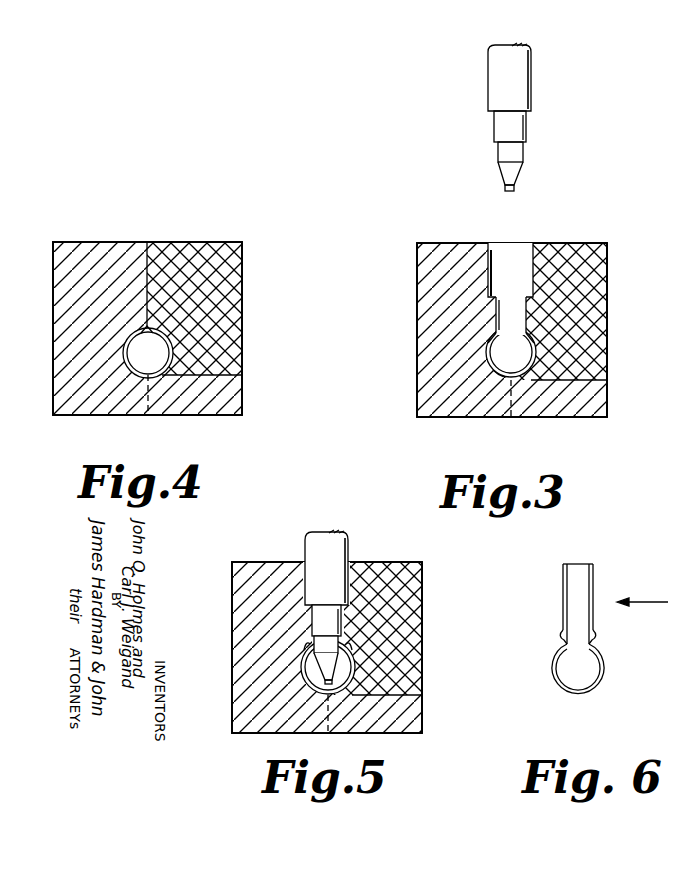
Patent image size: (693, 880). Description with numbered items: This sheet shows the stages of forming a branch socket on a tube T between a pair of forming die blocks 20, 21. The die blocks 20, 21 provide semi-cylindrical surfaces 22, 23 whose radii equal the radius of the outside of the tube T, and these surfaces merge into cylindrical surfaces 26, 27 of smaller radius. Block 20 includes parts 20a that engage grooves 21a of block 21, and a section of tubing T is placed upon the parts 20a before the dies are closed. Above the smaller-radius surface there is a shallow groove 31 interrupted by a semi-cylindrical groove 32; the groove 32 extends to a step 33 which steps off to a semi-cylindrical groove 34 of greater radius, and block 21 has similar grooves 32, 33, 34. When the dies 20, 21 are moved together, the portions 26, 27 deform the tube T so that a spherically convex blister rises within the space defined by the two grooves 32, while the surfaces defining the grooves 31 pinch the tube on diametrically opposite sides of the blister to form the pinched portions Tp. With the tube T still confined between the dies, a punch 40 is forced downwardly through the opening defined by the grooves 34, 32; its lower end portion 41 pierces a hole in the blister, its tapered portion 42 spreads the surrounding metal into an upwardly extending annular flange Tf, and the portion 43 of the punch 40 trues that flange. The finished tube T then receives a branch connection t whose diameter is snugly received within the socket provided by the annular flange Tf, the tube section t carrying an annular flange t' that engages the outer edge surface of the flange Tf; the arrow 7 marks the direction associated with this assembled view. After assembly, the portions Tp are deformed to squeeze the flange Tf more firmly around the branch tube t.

In FIG. 4, the die block 20 is at (92, 242).
In FIG. 3, the die block 20 is at (417, 352).
In FIG. 5, the die block 20 is at (258, 562).
In FIG. 4, the parts of block 20 20a is at (242, 400).
In FIG. 3, the parts of block 20 20a is at (607, 402).
In FIG. 5, the parts of block 20 20a is at (422, 708).
In FIG. 3, the die block 21 is at (607, 350).
In FIG. 5, the die block 21 is at (428, 554).
In FIG. 4, the grooves of part 21 21a is at (150, 398).
In FIG. 3, the grooves of part 21 21a is at (528, 412).
In FIG. 5, the grooves of part 21 21a is at (345, 735).
In FIG. 3, the semi-cylindrical surface 22 is at (493, 368).
In FIG. 3, the semi-cylindrical surface 23 is at (516, 358).
In FIG. 3, the cylindrical surface 26 is at (494, 338).
In FIG. 3, the cylindrical surface 27 is at (530, 345).
In FIG. 4, the shallow groove 31 is at (140, 333).
In FIG. 3, the semi-cylindrical groove 32 is at (496, 320).
In FIG. 3, the step 33 is at (489, 283).
In FIG. 3, the semi-cylindrical groove 34 is at (492, 251).
In FIG. 3, the punch 40 is at (533, 80).
In FIG. 5, the punch 40 is at (350, 548).
In FIG. 3, the lower end portion of punch 41 is at (504, 188).
In FIG. 3, the tapered portion of punch 42 is at (515, 175).
In FIG. 3, the truing portion of punch 43 is at (496, 153).
In FIG. 6, the direction arrow 7 is at (642, 603).
In FIG. 4, the tube T is at (148, 353).
In FIG. 3, the tube T is at (511, 352).
In FIG. 5, the tube T is at (352, 682).
In FIG. 6, the tube T is at (604, 678).
In FIG. 4, the pinched portions of tube Tp is at (150, 328).
In FIG. 5, the annular flange Tf is at (345, 643).
In FIG. 6, the annular flange Tf is at (594, 642).
In FIG. 6, the branch connection tube t is at (585, 604).
In FIG. 6, the annular flange of tube t t' is at (565, 628).